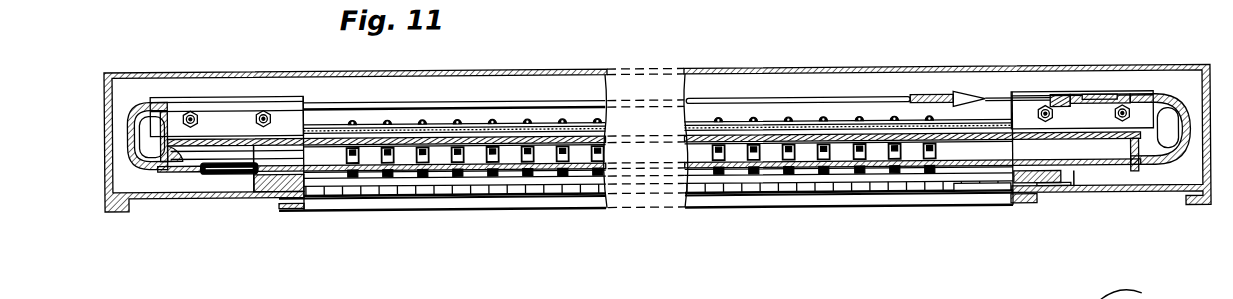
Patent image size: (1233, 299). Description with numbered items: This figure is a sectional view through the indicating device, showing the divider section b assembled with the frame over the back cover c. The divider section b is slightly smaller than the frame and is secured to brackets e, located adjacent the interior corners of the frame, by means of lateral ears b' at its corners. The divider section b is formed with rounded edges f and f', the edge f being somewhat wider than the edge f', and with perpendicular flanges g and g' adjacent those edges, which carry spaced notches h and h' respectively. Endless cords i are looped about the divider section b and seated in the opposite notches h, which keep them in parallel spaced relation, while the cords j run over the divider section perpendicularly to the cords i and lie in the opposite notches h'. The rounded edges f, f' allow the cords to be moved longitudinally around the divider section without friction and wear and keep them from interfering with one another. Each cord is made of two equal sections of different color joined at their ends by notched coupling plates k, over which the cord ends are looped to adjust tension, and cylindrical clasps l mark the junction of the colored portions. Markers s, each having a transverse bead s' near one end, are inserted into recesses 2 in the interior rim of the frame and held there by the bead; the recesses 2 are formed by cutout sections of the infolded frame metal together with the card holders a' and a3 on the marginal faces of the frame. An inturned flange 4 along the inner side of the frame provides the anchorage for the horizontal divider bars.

The back cover c is at (545, 74).
The lateral ears b' is at (652, 83).
The divider section b is at (654, 90).
The endless cords i is at (313, 109).
The rounded edge f' is at (658, 84).
The cords j is at (492, 123).
The notched coupling plates k is at (997, 108).
The rounded edge f is at (629, 109).
The perpendicular flange g is at (641, 190).
The notches h is at (671, 210).
The cylindrical clasps l is at (208, 184).
The brackets e is at (206, 186).
The recesses 2 is at (272, 188).
The inturned flange 4 is at (253, 176).
The card holder a' is at (296, 227).
The perpendicular flange g' is at (455, 216).
The notches h' is at (642, 211).
The markers s is at (982, 212).
The transverse bead s' is at (1054, 212).
The card holder a3 is at (1135, 195).